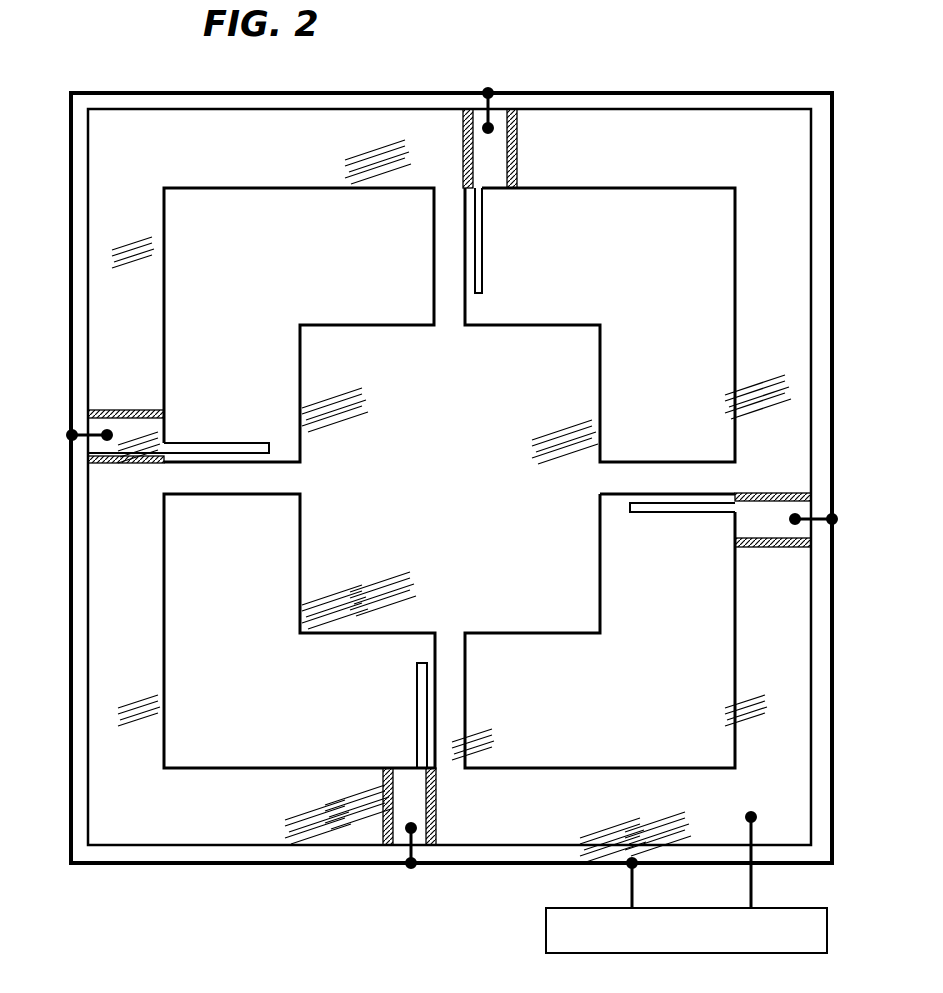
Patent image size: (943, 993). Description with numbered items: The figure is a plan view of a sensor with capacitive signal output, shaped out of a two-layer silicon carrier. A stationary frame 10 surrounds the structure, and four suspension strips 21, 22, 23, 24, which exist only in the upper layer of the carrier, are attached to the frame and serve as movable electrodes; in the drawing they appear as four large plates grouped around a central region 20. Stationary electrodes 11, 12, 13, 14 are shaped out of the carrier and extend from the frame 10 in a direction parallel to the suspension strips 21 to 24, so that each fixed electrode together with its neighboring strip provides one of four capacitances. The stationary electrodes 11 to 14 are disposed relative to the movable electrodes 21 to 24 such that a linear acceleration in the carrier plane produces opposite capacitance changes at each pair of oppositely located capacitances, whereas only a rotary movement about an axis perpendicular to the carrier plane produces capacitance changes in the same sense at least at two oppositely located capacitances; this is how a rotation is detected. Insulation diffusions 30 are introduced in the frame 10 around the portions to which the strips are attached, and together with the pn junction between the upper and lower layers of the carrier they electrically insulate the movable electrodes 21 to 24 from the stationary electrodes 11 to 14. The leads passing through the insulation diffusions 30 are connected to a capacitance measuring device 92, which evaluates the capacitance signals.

The stationary frame 10 is at (538, 830).
The stationary electrode 11 is at (480, 240).
The stationary electrode 12 is at (685, 505).
The stationary electrode 13 is at (423, 713).
The stationary electrode 14 is at (220, 452).
The central gap region 20 is at (455, 497).
The suspension strip 21 is at (447, 278).
The suspension strip 22 is at (652, 478).
The suspension strip 23 is at (455, 700).
The suspension strip 24 is at (255, 480).
The insulation diffusion 30 is at (512, 93).
The capacitance measuring device 92 is at (546, 923).